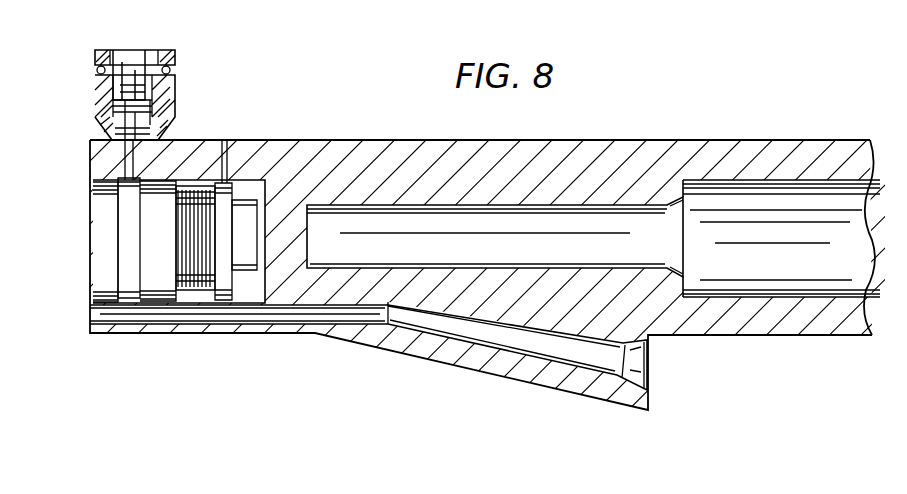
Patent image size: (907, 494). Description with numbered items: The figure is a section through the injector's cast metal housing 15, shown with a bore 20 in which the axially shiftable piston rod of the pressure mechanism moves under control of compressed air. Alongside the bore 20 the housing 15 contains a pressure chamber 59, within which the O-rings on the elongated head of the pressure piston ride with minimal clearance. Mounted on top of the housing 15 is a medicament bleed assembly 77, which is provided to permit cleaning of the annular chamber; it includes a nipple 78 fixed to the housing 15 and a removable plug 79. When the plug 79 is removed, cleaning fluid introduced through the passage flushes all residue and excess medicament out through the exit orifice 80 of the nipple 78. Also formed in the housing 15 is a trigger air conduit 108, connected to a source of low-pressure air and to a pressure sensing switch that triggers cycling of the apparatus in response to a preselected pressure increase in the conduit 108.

The housing 15 is at (653, 150).
The bore 20 is at (773, 186).
The pressure chamber 59 is at (495, 210).
The medicament bleed assembly 77 is at (177, 93).
The nipple 78 is at (105, 100).
The plug 79 is at (128, 60).
The exit orifice 80 is at (117, 134).
The trigger air conduit 108 is at (483, 338).